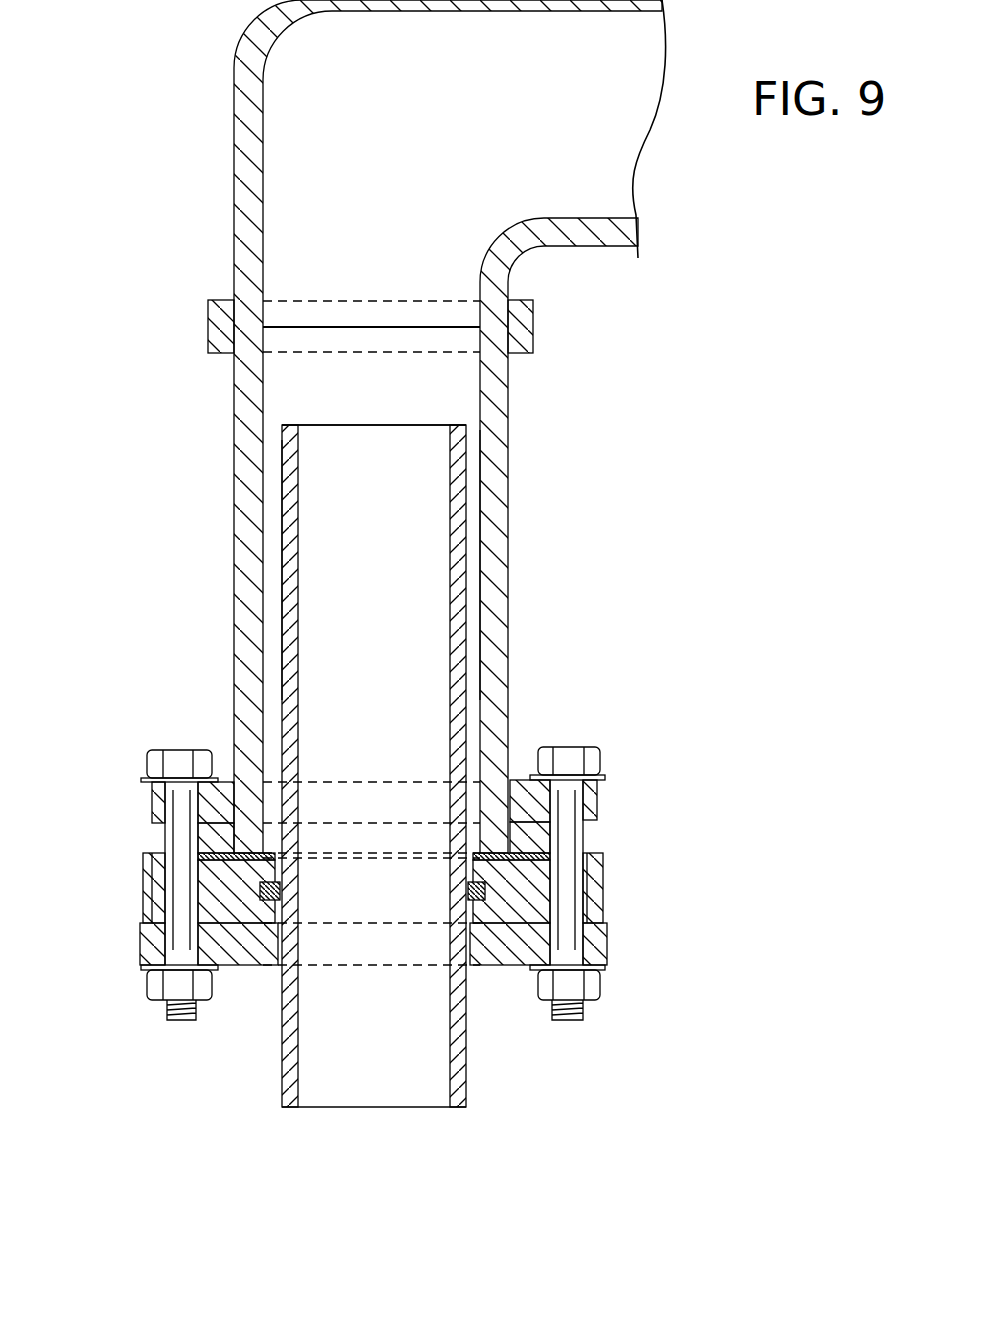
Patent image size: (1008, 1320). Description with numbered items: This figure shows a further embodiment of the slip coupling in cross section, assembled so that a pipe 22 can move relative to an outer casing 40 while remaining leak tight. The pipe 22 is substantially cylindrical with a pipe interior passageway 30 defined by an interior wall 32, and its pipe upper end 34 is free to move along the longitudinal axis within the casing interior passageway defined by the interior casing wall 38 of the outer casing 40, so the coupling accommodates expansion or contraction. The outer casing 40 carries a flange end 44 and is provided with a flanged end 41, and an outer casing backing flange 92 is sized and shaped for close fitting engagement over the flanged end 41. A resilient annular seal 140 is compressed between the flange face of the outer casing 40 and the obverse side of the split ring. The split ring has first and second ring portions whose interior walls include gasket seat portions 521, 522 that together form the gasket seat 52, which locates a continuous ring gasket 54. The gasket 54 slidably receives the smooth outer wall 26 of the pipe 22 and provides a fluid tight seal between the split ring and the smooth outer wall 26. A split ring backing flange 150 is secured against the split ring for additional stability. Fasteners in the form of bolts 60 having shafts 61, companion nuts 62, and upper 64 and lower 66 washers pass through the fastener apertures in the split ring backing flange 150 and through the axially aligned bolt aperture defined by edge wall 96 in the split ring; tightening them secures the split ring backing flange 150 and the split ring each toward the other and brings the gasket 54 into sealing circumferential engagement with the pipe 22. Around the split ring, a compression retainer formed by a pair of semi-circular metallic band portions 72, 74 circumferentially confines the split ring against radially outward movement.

The pipe 22 is at (297, 1106).
The smooth outer wall 26 is at (285, 1097).
The pipe interior passageway 30 is at (440, 561).
The interior wall 32 is at (300, 545).
The pipe upper end 34 is at (457, 424).
The interior casing wall 38 is at (485, 566).
The outer casing 40 is at (497, 498).
The flanged end 41 is at (211, 843).
The annular seal 140 is at (481, 853).
The flange end 44 is at (233, 852).
The gasket seat 52 is at (372, 1007).
The gasket seat portion 521 is at (487, 890).
The gasket seat portion 522 is at (240, 888).
The gasket 54 is at (262, 885).
The bolt 60 is at (177, 758).
The shaft 61 is at (180, 840).
The nut 62 is at (157, 987).
The upper washer 64 is at (153, 782).
The lower washer 66 is at (153, 968).
The semi-circular metallic band portion 72 is at (147, 897).
The semi-circular metallic band portion 74 is at (603, 895).
The outer casing backing flange 92 is at (597, 803).
The aperture edge wall 96 is at (155, 895).
The split ring backing flange 150 is at (608, 942).